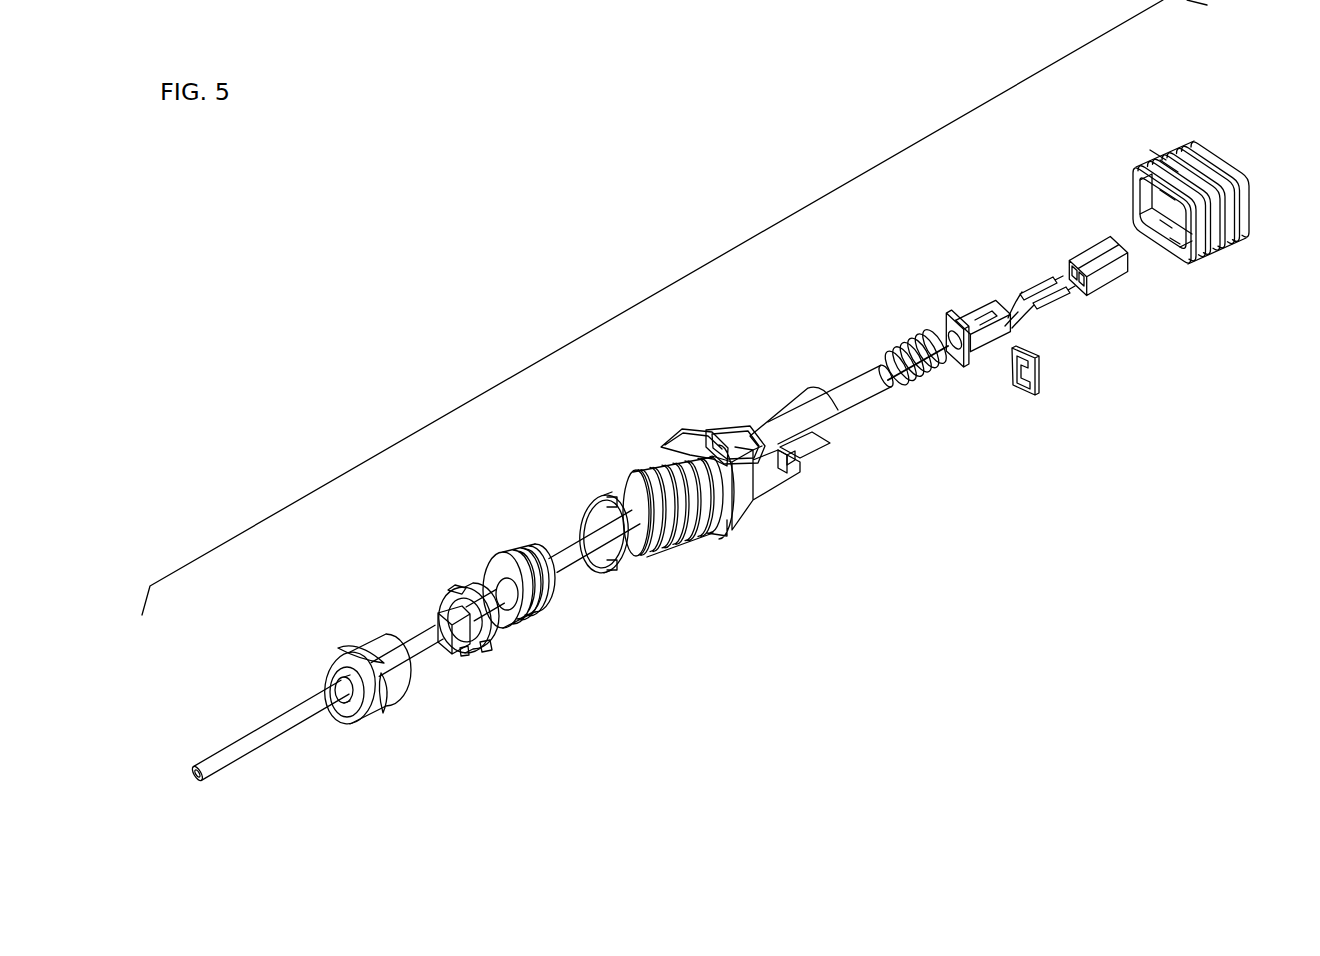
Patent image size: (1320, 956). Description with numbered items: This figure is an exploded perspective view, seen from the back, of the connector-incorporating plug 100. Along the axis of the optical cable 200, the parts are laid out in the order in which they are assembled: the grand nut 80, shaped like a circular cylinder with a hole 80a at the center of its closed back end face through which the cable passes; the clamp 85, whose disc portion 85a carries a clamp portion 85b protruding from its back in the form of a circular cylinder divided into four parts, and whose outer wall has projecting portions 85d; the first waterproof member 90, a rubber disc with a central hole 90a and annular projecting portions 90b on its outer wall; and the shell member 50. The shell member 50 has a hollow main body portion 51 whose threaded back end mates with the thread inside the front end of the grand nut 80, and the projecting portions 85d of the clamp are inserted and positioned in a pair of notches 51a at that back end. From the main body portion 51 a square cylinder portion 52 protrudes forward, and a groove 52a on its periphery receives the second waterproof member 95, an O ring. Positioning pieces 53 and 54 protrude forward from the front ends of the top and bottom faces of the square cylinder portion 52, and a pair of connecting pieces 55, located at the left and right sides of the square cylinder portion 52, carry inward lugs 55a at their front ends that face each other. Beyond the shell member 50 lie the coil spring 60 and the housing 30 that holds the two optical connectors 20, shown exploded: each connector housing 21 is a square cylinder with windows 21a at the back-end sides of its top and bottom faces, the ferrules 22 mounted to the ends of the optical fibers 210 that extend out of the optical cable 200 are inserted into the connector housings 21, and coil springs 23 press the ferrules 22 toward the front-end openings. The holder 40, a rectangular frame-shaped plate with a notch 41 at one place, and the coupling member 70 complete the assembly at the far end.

The connector-incorporating plug 100 is at (381, 357).
The optical cable 200 is at (233, 750).
The grand nut 80 is at (345, 625).
The hole 80a is at (337, 700).
The clamp 85 is at (438, 588).
The disc portion 85a is at (490, 648).
The clamp portion 85b is at (478, 655).
The projecting portions 85d is at (463, 586).
The first waterproof member 90 is at (500, 550).
The hole 90a is at (523, 622).
The annular projecting portions 90b is at (553, 606).
The shell member 50 is at (665, 427).
The main body portion 51 is at (688, 530).
The notches 51a is at (611, 497).
The square cylinder portion 52 is at (770, 472).
The groove 52a is at (758, 440).
The positioning piece 53 is at (800, 397).
The positioning piece 54 is at (822, 442).
The connecting pieces 55 is at (783, 472).
The inward lugs 55a is at (792, 458).
The second waterproof member 95 is at (722, 430).
The coil spring 60 is at (900, 342).
The housing 30 is at (965, 312).
The optical connectors 20 is at (1068, 186).
The connector housings 21 is at (1092, 245).
The windows 21a is at (1102, 283).
The ferrules 22 is at (1052, 272).
The coil springs 23 is at (1027, 280).
The optical fibers 210 is at (1017, 307).
The holder 40 is at (1040, 382).
The notch 41 is at (1008, 368).
The coupling member 70 is at (1170, 140).